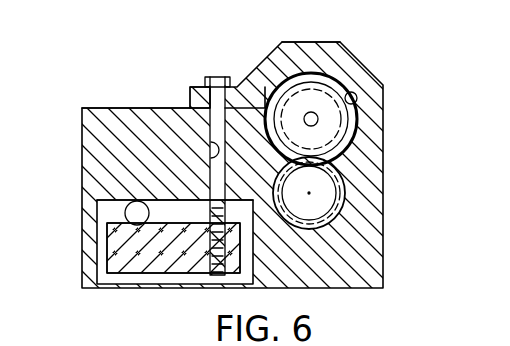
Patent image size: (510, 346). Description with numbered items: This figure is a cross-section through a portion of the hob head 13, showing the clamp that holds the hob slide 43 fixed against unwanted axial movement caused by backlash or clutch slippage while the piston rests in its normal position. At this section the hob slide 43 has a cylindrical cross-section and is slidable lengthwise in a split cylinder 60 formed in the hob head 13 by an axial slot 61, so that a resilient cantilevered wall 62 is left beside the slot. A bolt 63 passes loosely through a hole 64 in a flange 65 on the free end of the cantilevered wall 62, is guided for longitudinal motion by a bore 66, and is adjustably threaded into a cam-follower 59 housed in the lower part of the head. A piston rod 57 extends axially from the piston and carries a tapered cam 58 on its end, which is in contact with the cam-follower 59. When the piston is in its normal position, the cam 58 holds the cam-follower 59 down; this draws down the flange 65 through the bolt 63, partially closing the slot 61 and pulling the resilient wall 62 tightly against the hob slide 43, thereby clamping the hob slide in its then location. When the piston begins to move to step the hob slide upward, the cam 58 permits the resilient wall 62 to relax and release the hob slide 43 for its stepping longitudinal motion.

The hob head 13 is at (384, 184).
The hob slide 43 is at (287, 84).
The piston rod 57 is at (133, 205).
The tapered cam 58 is at (135, 213).
The cam-follower 59 is at (173, 284).
The split cylinder 60 is at (352, 97).
The axial slot 61 is at (190, 107).
The resilient cantilevered wall 62 is at (322, 42).
The bolt 63 is at (205, 78).
The hole 64 is at (220, 79).
The flange 65 is at (190, 99).
The bore 66 is at (212, 150).